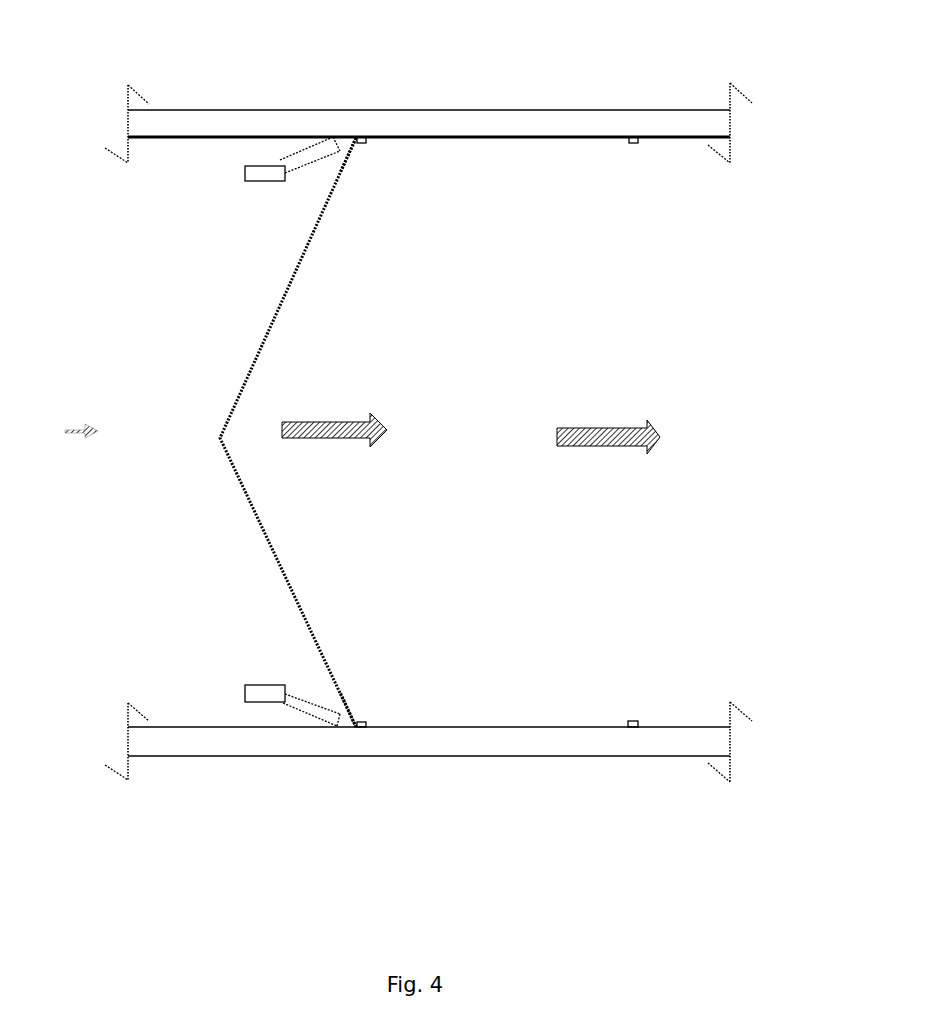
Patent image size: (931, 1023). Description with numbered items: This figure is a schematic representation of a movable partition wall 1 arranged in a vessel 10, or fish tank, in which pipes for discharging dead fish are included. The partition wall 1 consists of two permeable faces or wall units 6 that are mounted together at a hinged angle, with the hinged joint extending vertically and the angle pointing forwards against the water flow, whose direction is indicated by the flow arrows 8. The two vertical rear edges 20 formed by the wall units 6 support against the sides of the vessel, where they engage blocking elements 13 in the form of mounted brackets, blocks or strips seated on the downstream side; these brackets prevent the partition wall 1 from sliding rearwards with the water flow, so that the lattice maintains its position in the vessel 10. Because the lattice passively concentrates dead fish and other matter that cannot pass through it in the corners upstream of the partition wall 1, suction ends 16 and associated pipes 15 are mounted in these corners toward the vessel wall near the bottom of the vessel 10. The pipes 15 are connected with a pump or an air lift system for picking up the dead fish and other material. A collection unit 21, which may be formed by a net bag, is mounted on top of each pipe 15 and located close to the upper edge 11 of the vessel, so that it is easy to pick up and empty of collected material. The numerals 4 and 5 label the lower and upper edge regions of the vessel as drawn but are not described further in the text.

The movable partition wall 1 is at (146, 421).
The lower support 4 is at (122, 745).
The upper support 5 is at (122, 122).
The wall unit 6 is at (292, 275).
The flow arrow 8 is at (335, 422).
The vessel 10 is at (642, 302).
The upper edge 11 is at (530, 125).
The blocking element 13 is at (622, 146).
The pipe 15 is at (282, 160).
The suction end 16 is at (339, 157).
The vertical rear edge 20 is at (349, 136).
The collection unit 21 is at (243, 174).